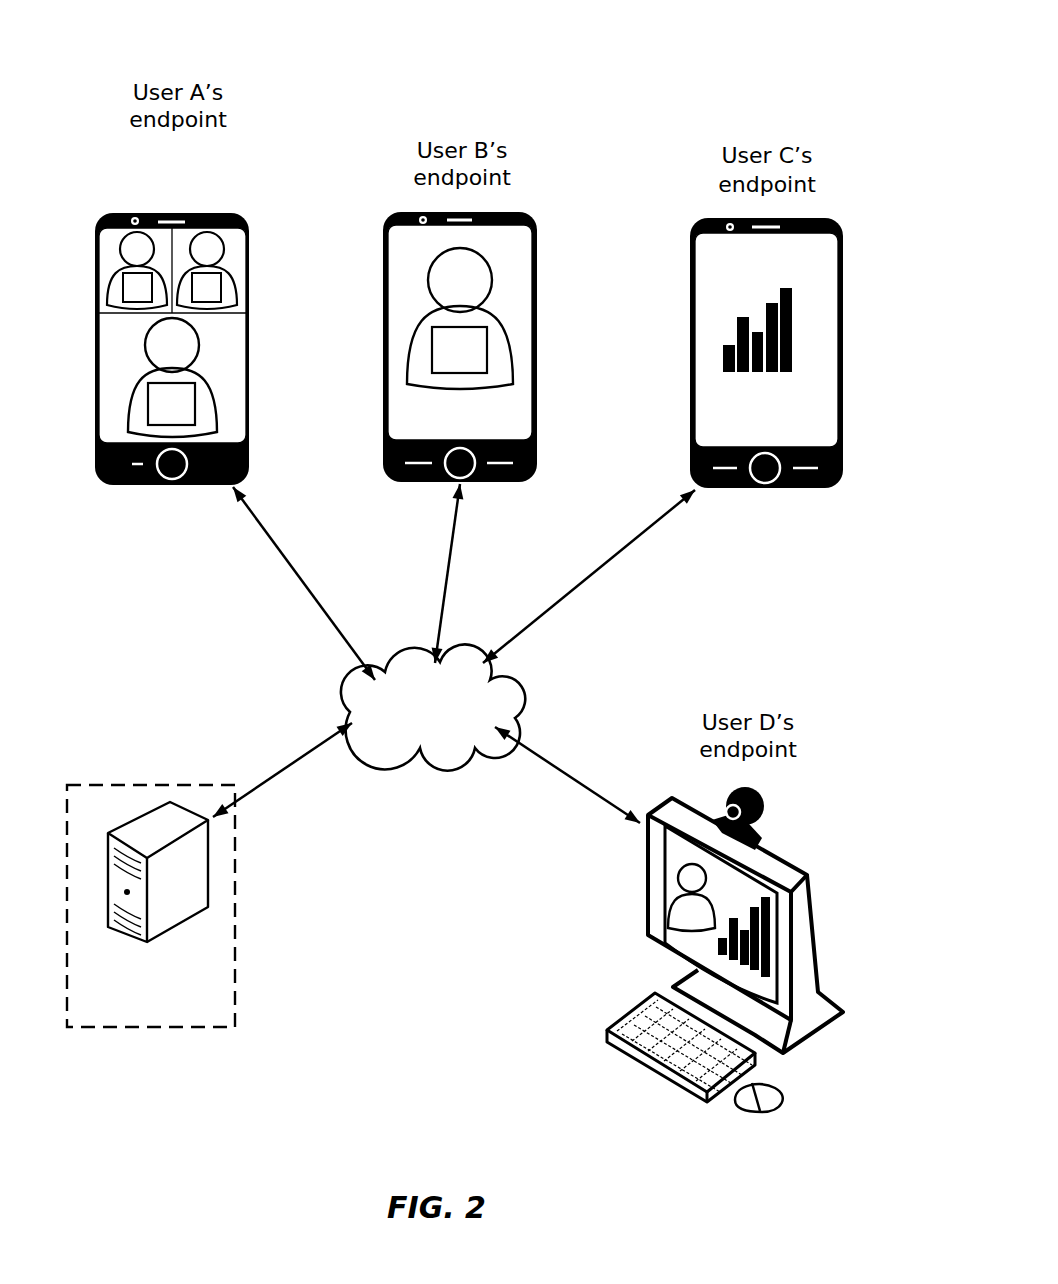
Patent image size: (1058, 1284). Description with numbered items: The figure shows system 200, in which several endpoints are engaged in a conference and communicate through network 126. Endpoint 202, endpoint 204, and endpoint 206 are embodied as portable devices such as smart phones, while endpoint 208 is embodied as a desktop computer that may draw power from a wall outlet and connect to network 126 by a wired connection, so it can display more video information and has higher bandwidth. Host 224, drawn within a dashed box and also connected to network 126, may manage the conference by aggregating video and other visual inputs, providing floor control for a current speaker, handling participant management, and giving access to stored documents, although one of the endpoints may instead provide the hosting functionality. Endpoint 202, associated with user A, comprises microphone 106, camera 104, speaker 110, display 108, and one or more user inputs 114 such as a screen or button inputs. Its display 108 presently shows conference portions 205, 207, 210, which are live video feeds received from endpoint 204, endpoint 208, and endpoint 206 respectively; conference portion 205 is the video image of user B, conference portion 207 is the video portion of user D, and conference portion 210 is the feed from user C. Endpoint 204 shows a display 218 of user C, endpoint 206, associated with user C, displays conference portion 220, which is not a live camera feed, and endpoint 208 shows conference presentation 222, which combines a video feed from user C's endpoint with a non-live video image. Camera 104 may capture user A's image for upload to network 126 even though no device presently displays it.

The system 200 is at (814, 58).
The camera 104 is at (133, 216).
The speaker 110 is at (172, 216).
The endpoint 202 is at (236, 213).
The conference portion 205 is at (110, 250).
The conference portion 207 is at (240, 265).
The display 108 is at (232, 345).
The user inputs 114 is at (234, 375).
The conference portion 210 is at (130, 350).
The microphone 106 is at (130, 472).
The endpoint 204 is at (524, 224).
The display of User B's endpoint 218 is at (517, 305).
The endpoint 206 is at (832, 214).
The conference portion 220 is at (821, 313).
The endpoint 208 is at (803, 865).
The conference presentation 222 is at (627, 921).
The network 126 is at (436, 733).
The host 224 is at (158, 896).